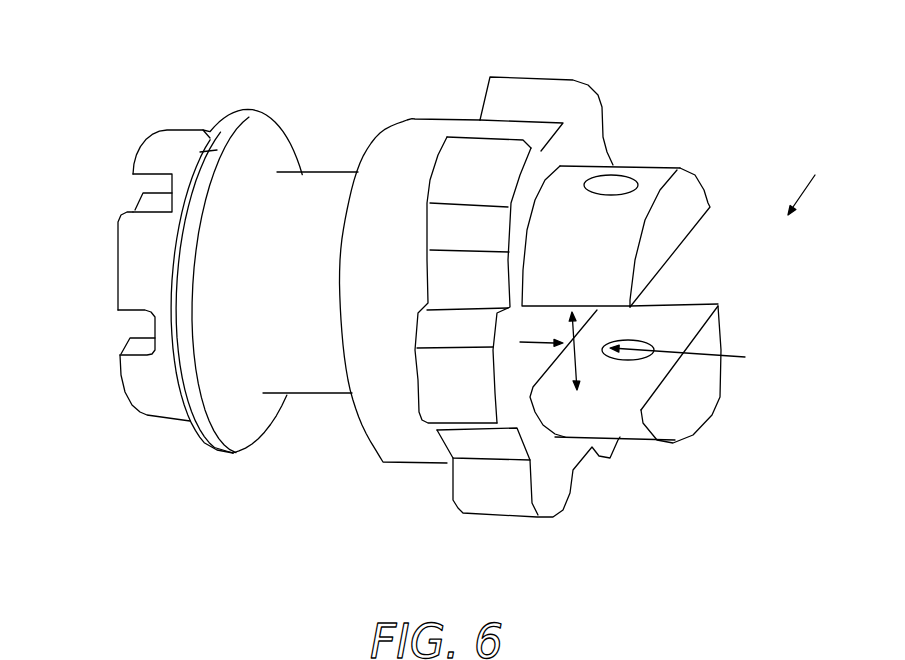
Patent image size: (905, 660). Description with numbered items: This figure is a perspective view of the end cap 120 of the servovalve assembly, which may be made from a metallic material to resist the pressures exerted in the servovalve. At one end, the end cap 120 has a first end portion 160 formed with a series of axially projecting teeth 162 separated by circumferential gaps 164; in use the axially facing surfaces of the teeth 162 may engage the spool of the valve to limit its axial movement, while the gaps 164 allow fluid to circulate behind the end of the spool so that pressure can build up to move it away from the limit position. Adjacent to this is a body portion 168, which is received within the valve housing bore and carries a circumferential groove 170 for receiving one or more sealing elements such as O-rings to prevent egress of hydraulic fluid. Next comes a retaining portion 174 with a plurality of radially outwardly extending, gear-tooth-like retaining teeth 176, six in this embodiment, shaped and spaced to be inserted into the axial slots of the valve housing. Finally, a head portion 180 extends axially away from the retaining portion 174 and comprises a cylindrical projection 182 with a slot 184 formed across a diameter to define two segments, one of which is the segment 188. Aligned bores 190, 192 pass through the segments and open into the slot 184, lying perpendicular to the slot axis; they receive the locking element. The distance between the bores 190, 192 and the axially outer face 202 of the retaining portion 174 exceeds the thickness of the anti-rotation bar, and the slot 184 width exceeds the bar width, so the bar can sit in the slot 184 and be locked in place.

The end cap 120 is at (437, 299).
The first end portion 160 is at (183, 281).
The axially projecting teeth 162 is at (107, 223).
The circumferential gaps 164 is at (104, 332).
The body portion 168 is at (386, 322).
The circumferential groove 170 is at (310, 250).
The retaining portion 174 is at (510, 214).
The retaining teeth 176 is at (528, 305).
The head portion 180 is at (673, 278).
The cylindrical projection 182 is at (671, 370).
The slot 184 is at (650, 236).
The segment 188 is at (704, 306).
The bore 190 is at (621, 156).
The bore 192 is at (646, 420).
The axially outer face 202 is at (543, 440).